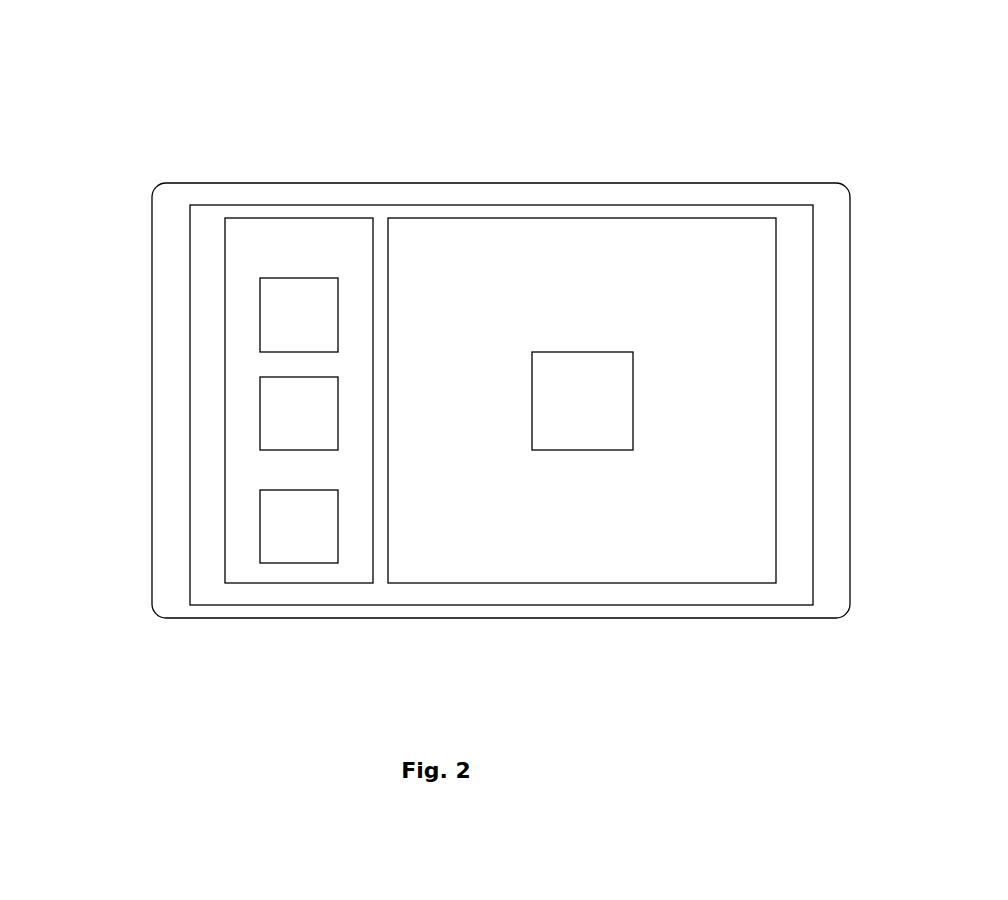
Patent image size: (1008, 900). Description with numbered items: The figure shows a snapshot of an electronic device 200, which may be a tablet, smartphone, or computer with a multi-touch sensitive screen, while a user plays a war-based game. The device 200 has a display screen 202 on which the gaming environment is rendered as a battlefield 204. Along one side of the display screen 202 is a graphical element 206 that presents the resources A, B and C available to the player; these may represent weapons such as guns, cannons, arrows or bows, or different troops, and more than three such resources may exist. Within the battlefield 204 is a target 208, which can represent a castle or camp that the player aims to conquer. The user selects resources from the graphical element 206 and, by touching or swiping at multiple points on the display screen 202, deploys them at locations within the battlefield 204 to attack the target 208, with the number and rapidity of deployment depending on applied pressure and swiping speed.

The electronic device 200 is at (238, 182).
The display screen 202 is at (360, 205).
The battlefield 204 is at (585, 243).
The graphical element 206 is at (240, 265).
The target 208 is at (582, 401).